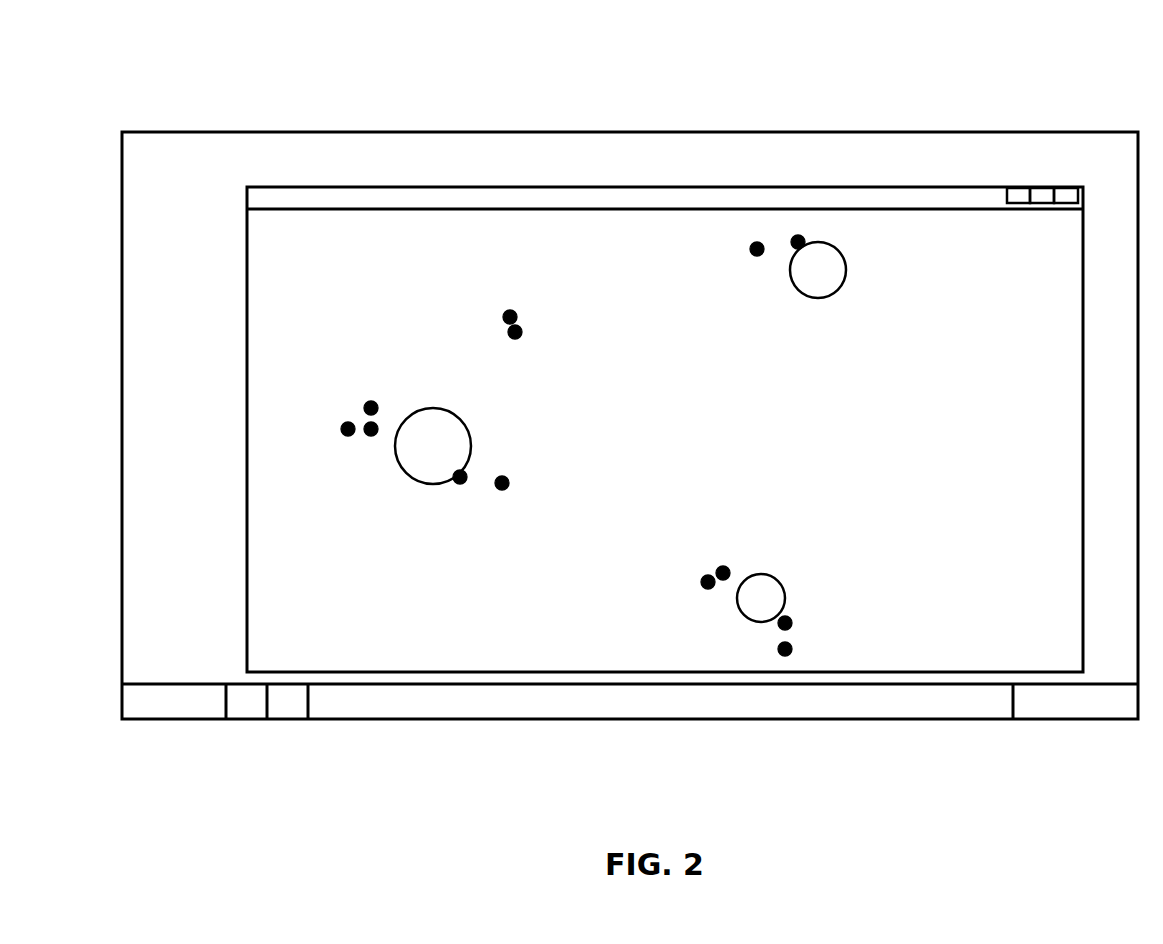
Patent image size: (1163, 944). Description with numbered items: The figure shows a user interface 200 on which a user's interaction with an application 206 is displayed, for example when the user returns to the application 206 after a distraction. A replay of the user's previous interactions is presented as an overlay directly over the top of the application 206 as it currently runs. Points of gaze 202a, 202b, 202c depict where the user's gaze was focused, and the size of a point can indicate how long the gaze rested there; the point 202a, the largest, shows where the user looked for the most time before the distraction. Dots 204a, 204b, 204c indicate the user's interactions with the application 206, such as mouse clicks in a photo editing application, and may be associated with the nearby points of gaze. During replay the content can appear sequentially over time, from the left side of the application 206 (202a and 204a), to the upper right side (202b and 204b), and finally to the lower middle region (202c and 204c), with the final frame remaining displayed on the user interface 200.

The user interface 200 is at (296, 77).
The point of gaze 202a is at (462, 415).
The point of gaze 202b is at (826, 243).
The point of gaze 202c is at (768, 575).
The user-application interaction dots 204a is at (470, 460).
The user-application interaction dots 204b is at (774, 280).
The user-application interaction dots 204c is at (765, 637).
The application 206 is at (238, 491).